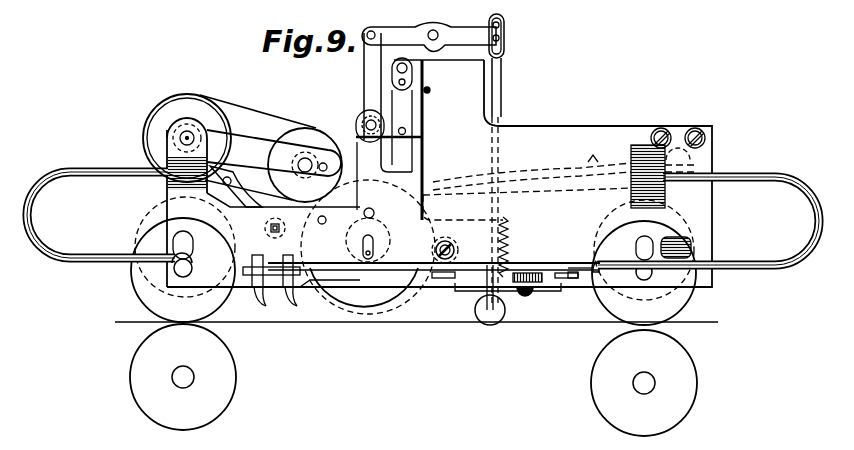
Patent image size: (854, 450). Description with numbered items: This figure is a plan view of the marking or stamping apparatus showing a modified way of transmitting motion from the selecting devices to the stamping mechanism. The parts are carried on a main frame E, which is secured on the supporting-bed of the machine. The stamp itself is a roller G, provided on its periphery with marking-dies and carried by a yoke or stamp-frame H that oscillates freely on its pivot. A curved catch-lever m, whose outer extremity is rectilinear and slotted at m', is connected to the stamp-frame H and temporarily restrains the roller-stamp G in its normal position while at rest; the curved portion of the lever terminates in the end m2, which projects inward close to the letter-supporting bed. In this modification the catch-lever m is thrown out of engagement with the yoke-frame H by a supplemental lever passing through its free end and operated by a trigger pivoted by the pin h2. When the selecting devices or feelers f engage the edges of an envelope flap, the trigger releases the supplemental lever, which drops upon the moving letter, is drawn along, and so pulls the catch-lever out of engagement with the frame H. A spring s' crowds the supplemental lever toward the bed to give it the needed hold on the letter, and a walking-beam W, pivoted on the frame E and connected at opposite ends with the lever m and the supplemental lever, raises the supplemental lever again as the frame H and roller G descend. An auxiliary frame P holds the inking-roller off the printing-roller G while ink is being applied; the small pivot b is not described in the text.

The walking-beam W is at (429, 37).
The slot m' is at (509, 159).
The yoke H is at (384, 121).
The curved lever m is at (420, 139).
The main frame E is at (605, 203).
The spring s' is at (510, 247).
The roller G is at (364, 287).
The end of lever m2 is at (487, 312).
The pin h2 is at (520, 293).
The pivot stud b is at (373, 215).
The auxiliary frame P is at (248, 214).
The feelers f is at (264, 285).